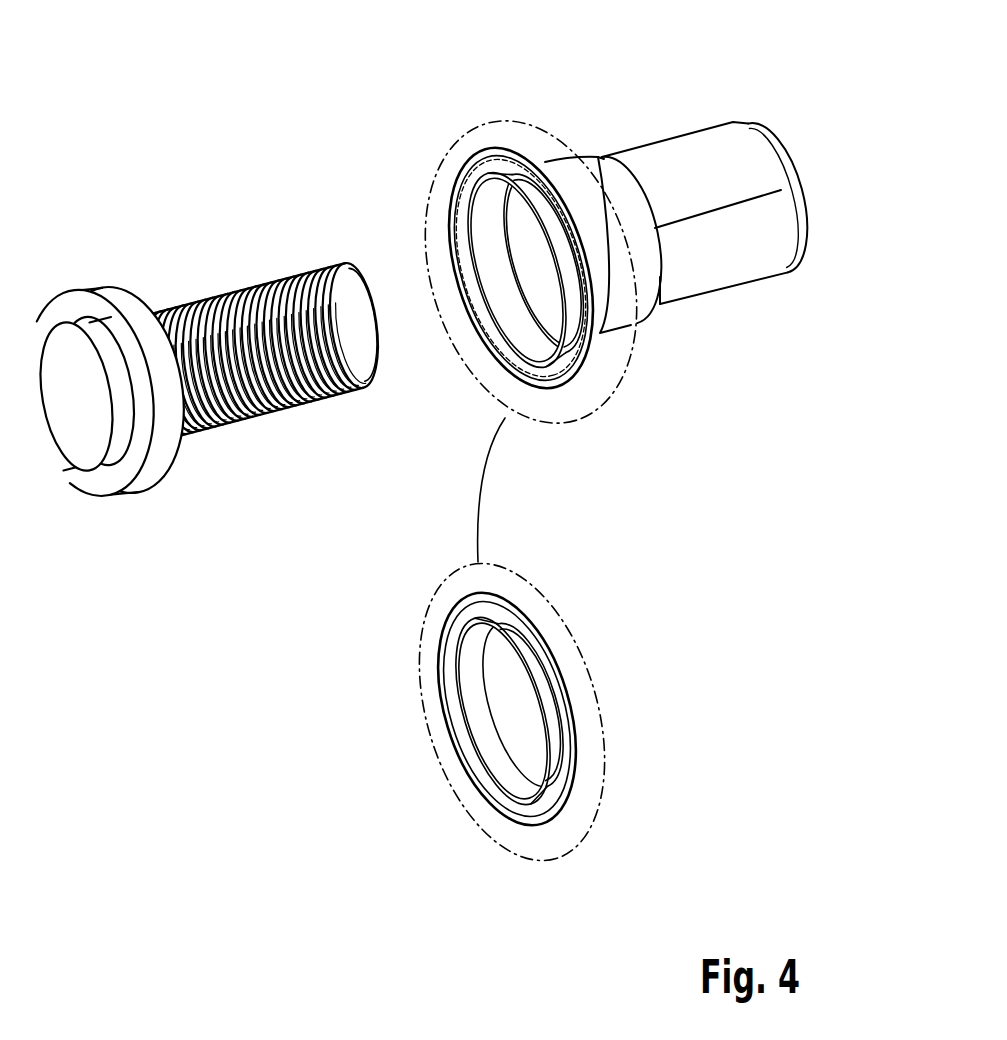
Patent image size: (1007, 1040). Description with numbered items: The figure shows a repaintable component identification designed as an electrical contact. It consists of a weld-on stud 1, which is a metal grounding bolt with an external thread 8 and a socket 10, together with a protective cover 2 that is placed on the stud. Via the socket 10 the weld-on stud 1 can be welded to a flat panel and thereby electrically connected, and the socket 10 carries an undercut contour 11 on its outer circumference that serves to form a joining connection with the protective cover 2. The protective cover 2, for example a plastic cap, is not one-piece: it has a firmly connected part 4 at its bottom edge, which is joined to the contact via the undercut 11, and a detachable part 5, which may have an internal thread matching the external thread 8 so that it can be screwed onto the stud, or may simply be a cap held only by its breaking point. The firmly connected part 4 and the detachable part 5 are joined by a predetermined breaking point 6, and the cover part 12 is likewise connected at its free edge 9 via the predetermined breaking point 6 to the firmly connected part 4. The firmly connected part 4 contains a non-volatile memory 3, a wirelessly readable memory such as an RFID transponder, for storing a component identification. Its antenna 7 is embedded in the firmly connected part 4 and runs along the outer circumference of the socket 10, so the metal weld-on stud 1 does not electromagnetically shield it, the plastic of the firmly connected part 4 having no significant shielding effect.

The weld-on stud 1 is at (194, 405).
The protective cover 2 is at (676, 187).
The non-volatile memory 3 is at (503, 310).
The firmly connected part 4 is at (453, 293).
The detachable part 5 is at (710, 150).
The predetermined breaking point 6 is at (529, 145).
The antenna 7 is at (458, 168).
The external thread 8 is at (291, 300).
The free edge 9 is at (482, 241).
The socket 10 is at (105, 435).
The undercut contour 11 is at (158, 474).
The cover part 12 is at (737, 268).